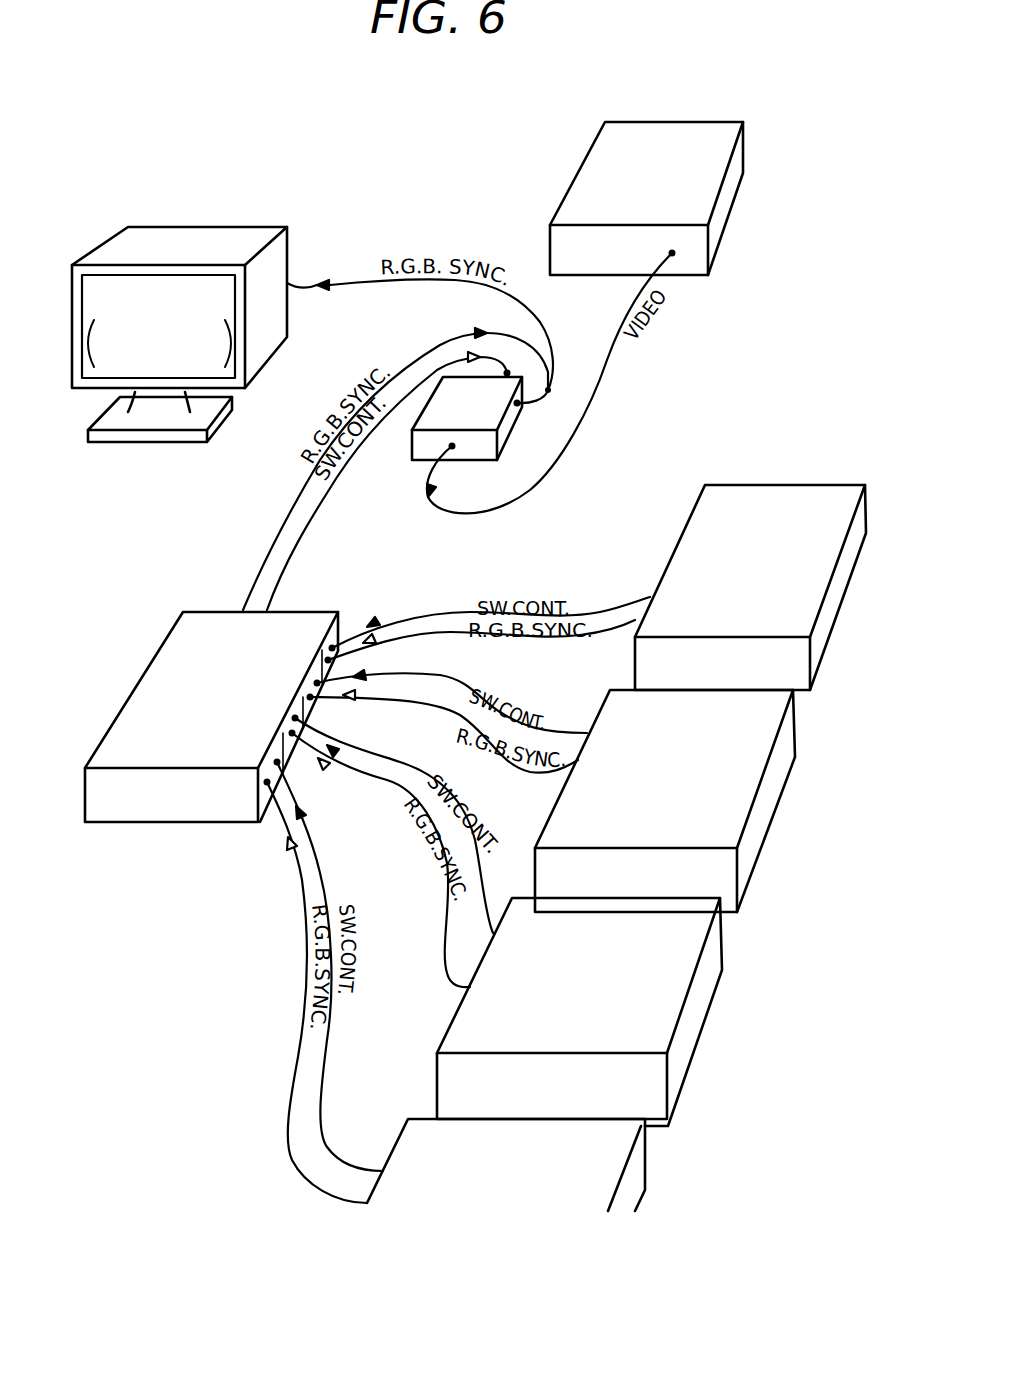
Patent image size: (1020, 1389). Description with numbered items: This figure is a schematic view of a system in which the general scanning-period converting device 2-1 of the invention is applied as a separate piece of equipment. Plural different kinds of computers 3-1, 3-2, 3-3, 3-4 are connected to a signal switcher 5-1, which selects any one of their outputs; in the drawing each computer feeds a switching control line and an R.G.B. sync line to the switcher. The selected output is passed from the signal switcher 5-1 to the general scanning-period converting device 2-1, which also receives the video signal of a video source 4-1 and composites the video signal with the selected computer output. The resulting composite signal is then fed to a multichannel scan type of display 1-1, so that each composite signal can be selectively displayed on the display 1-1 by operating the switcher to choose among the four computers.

The display 1-1 is at (223, 235).
The general scanning-period converting device 2-1 is at (505, 425).
The computer 3-1 is at (747, 490).
The computer 3-2 is at (748, 857).
The computer 3-3 is at (683, 1062).
The computer 3-4 is at (630, 1183).
The video source 4-1 is at (727, 200).
The signal switcher 5-1 is at (152, 678).